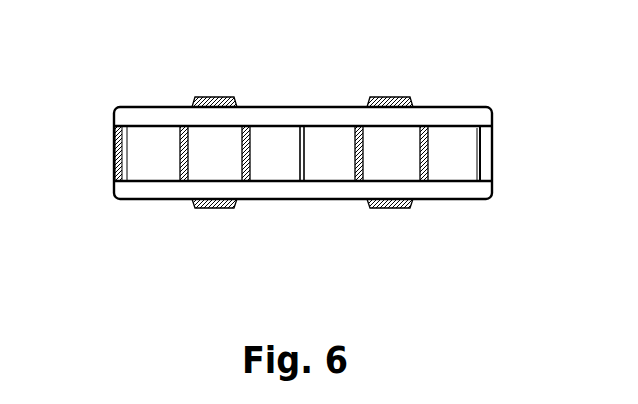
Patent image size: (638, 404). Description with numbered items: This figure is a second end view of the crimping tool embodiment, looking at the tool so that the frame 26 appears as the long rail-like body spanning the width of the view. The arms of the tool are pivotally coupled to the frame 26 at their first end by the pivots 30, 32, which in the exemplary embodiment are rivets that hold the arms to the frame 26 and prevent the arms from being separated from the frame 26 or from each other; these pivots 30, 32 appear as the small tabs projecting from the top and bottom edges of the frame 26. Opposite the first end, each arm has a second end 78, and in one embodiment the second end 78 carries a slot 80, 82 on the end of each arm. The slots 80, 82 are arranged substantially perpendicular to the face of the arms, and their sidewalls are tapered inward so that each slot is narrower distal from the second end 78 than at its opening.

The frame 26 is at (143, 107).
The pivot 30 is at (393, 97).
The pivot 32 is at (222, 97).
The second end 78 is at (145, 157).
The slot 80 is at (232, 170).
The slot 82 is at (377, 169).